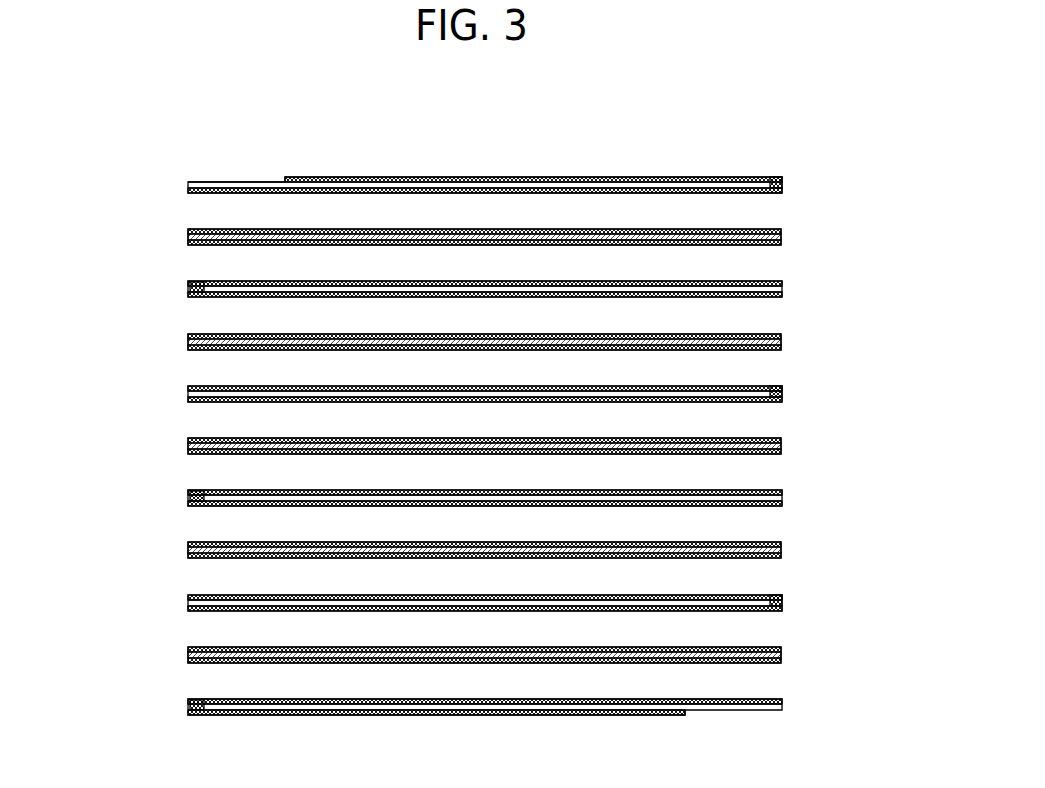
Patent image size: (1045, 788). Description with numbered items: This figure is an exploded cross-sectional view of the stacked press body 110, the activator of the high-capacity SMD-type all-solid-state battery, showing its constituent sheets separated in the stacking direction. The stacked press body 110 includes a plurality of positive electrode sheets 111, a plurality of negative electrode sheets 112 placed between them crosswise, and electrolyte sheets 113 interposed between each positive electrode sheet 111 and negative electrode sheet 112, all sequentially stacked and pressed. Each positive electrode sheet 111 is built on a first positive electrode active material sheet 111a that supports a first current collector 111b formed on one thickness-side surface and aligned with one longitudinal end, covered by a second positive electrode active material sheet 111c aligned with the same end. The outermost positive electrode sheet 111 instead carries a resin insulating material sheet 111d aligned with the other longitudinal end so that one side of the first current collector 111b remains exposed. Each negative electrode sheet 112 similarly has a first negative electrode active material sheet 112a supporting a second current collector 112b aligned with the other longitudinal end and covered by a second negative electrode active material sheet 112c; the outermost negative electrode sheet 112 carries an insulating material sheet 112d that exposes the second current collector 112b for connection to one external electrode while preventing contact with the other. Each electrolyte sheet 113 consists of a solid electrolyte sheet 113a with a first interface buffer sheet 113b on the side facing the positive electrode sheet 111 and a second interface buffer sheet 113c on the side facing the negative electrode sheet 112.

The stacked press body 110 is at (421, 157).
The positive electrode sheet 111 is at (877, 128).
The first positive electrode active material sheet 111a is at (778, 195).
The first current collector 111b is at (742, 185).
The second positive electrode active material sheet 111c is at (212, 388).
The insulating material sheet 111d is at (715, 178).
The negative electrode sheet 112 is at (70, 273).
The first negative electrode active material sheet 112a is at (190, 296).
The second current collector 112b is at (196, 288).
The second negative electrode active material sheet 112c is at (212, 283).
The insulating material sheet 112d is at (190, 714).
The electrolyte sheet 113 is at (877, 213).
The solid electrolyte sheet 113a is at (781, 237).
The first interface buffer sheet 113b is at (740, 230).
The second interface buffer sheet 113c is at (768, 245).